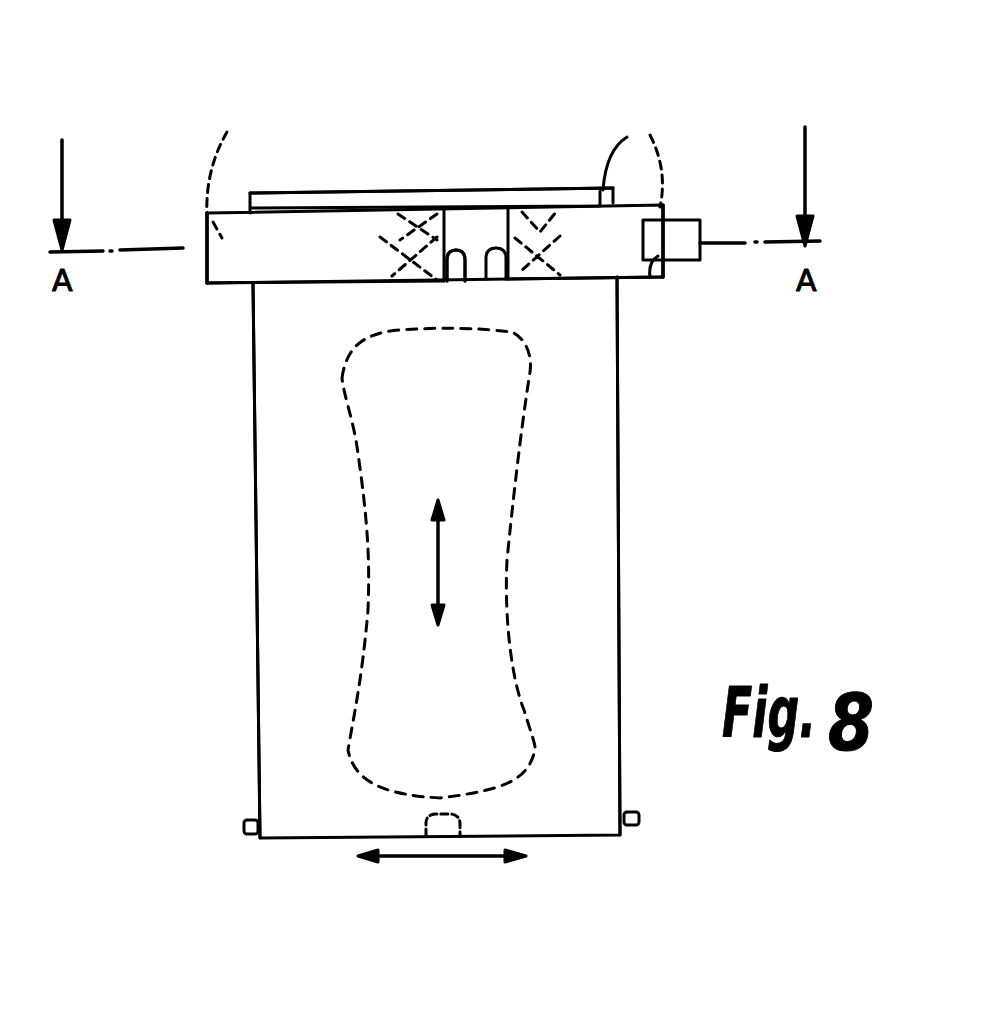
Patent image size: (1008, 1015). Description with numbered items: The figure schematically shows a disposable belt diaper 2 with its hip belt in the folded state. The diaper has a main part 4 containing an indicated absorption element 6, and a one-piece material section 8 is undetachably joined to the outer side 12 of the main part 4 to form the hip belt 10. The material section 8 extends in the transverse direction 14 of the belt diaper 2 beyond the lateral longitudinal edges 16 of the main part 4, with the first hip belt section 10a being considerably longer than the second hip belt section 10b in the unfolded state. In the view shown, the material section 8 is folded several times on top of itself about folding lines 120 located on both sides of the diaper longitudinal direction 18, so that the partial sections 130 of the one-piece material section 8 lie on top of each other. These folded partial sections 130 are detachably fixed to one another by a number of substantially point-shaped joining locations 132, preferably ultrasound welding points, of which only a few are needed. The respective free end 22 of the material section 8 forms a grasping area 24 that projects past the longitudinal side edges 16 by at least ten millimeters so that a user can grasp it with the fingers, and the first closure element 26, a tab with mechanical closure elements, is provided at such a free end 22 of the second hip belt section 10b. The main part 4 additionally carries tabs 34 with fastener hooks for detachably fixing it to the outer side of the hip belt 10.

The disposable belt diaper 2 is at (521, 150).
The main part 4 is at (594, 458).
The absorption element 6 is at (504, 661).
The one-piece material section 8 is at (460, 220).
The hip belt 10 is at (431, 190).
The first hip belt section 10a is at (280, 285).
The second hip belt section 10b is at (590, 280).
The outer side 12 is at (594, 352).
The transverse direction 14 is at (442, 861).
The lateral longitudinal edges 16 is at (254, 385).
The diaper longitudinal direction 18 is at (440, 557).
The free end 22 is at (207, 243).
The grasping area 24 is at (435, 244).
The first closure element 26 is at (673, 222).
The tabs 34 is at (250, 833).
The folding lines 120 is at (457, 281).
The partial sections 130 is at (247, 230).
The joining locations 132 is at (378, 237).